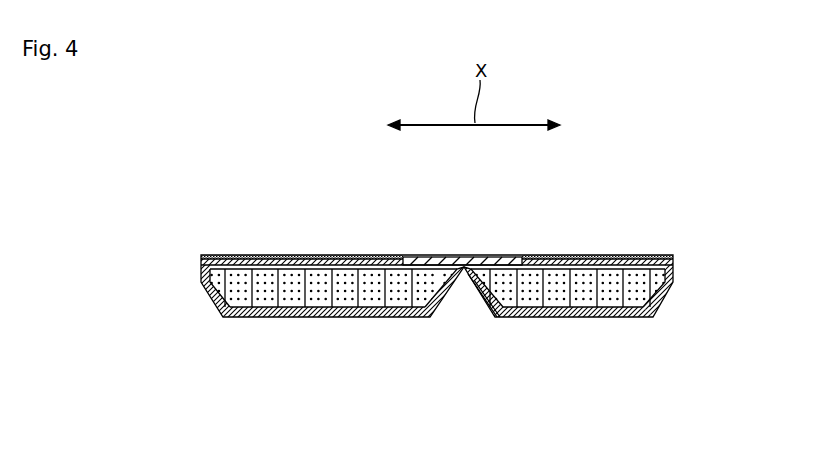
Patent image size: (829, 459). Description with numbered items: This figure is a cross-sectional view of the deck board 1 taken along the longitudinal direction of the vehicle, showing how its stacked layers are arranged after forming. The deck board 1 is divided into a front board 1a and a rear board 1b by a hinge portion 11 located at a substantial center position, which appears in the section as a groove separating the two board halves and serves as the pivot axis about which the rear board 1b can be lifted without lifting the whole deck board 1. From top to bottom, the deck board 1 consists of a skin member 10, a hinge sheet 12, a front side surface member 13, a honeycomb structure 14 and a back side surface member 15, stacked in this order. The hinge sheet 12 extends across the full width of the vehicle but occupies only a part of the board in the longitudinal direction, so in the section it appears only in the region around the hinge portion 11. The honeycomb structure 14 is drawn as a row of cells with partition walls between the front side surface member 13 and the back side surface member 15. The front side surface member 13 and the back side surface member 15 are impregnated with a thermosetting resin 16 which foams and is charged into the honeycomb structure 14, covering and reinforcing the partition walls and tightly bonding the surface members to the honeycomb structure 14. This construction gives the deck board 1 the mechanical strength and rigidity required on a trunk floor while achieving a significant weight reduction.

The deck board 1 is at (456, 319).
The front board 1a is at (332, 339).
The rear board 1b is at (587, 324).
The skin member 10 is at (625, 258).
The hinge portion 11 is at (465, 273).
The hinge sheet 12 is at (490, 258).
The front side surface member 13 is at (270, 255).
The honeycomb structure 14 is at (297, 317).
The back side surface member 15 is at (370, 317).
The thermosetting resin 16 is at (663, 292).